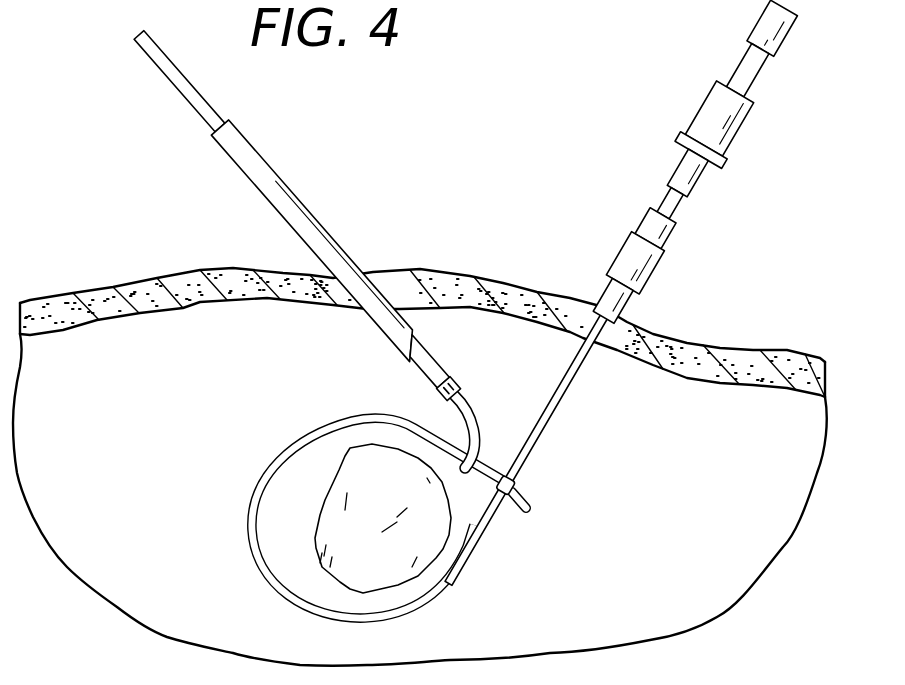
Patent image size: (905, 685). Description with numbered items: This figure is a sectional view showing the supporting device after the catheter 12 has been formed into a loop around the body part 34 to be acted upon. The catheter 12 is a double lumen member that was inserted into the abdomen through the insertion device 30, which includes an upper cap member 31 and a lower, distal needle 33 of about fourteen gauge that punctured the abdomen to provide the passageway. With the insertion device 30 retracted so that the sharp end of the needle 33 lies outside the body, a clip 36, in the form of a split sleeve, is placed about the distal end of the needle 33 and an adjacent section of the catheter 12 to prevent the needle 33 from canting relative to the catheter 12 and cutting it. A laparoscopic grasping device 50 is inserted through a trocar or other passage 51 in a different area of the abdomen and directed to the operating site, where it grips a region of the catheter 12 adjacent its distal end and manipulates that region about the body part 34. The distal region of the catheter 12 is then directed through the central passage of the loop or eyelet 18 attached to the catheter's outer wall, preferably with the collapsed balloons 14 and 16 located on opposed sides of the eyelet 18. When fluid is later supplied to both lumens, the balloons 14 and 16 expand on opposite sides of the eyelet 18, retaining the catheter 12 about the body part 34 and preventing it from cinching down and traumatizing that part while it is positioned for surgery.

The catheter 12 is at (556, 411).
The balloon 14 is at (531, 507).
The balloon 16 is at (507, 478).
The loop or eyelet 18 is at (513, 509).
The insertion device 30 is at (748, 160).
The upper cap member 31 is at (742, 128).
The needle 33 is at (683, 207).
The body part 34 is at (430, 550).
The clip 36 is at (665, 279).
The laparoscopic grasping device 50 is at (441, 371).
The trocar or other passage 51 is at (324, 247).